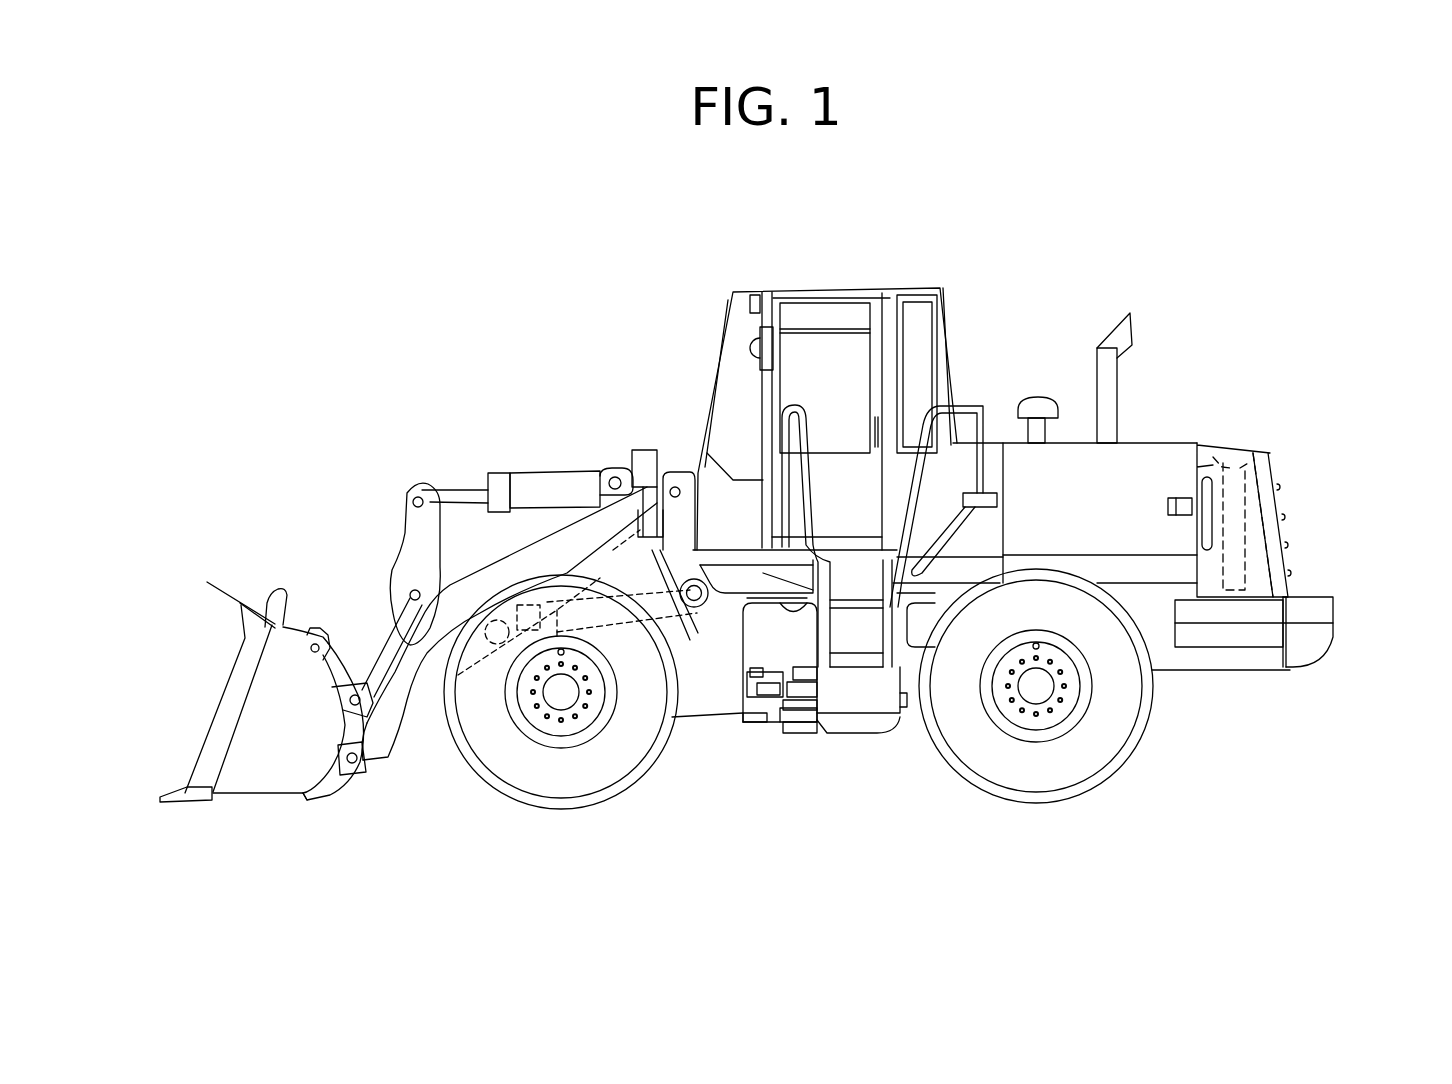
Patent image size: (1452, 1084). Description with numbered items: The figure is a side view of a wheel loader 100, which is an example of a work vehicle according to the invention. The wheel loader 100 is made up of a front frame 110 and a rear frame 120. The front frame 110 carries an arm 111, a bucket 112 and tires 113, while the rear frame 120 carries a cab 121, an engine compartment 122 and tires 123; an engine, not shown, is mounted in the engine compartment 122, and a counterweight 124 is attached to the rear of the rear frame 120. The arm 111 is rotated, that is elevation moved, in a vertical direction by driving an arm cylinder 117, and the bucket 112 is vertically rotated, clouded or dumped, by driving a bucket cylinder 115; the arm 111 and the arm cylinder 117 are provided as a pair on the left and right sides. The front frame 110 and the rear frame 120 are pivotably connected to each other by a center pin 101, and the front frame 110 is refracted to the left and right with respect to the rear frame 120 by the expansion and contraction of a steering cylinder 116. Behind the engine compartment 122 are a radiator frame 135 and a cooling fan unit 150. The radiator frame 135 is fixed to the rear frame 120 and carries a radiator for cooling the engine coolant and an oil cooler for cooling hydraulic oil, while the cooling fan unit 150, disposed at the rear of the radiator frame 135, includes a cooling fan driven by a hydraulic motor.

The wheel loader 100 is at (346, 276).
The center pin 101 is at (805, 733).
The front frame 110 is at (670, 475).
The arm 111 is at (418, 695).
The bucket 112 is at (255, 778).
The tires 113 is at (596, 778).
The bucket cylinder 115 is at (520, 478).
The steering cylinder 116 is at (747, 676).
The arm cylinder 117 is at (615, 625).
The rear frame 120 is at (1213, 672).
The cab 121 is at (820, 313).
The engine compartment 122 is at (1165, 455).
The tires 123 is at (1030, 785).
The counterweight 124 is at (1305, 607).
The radiator frame 135 is at (1225, 445).
The cooling fan unit 150 is at (1273, 445).